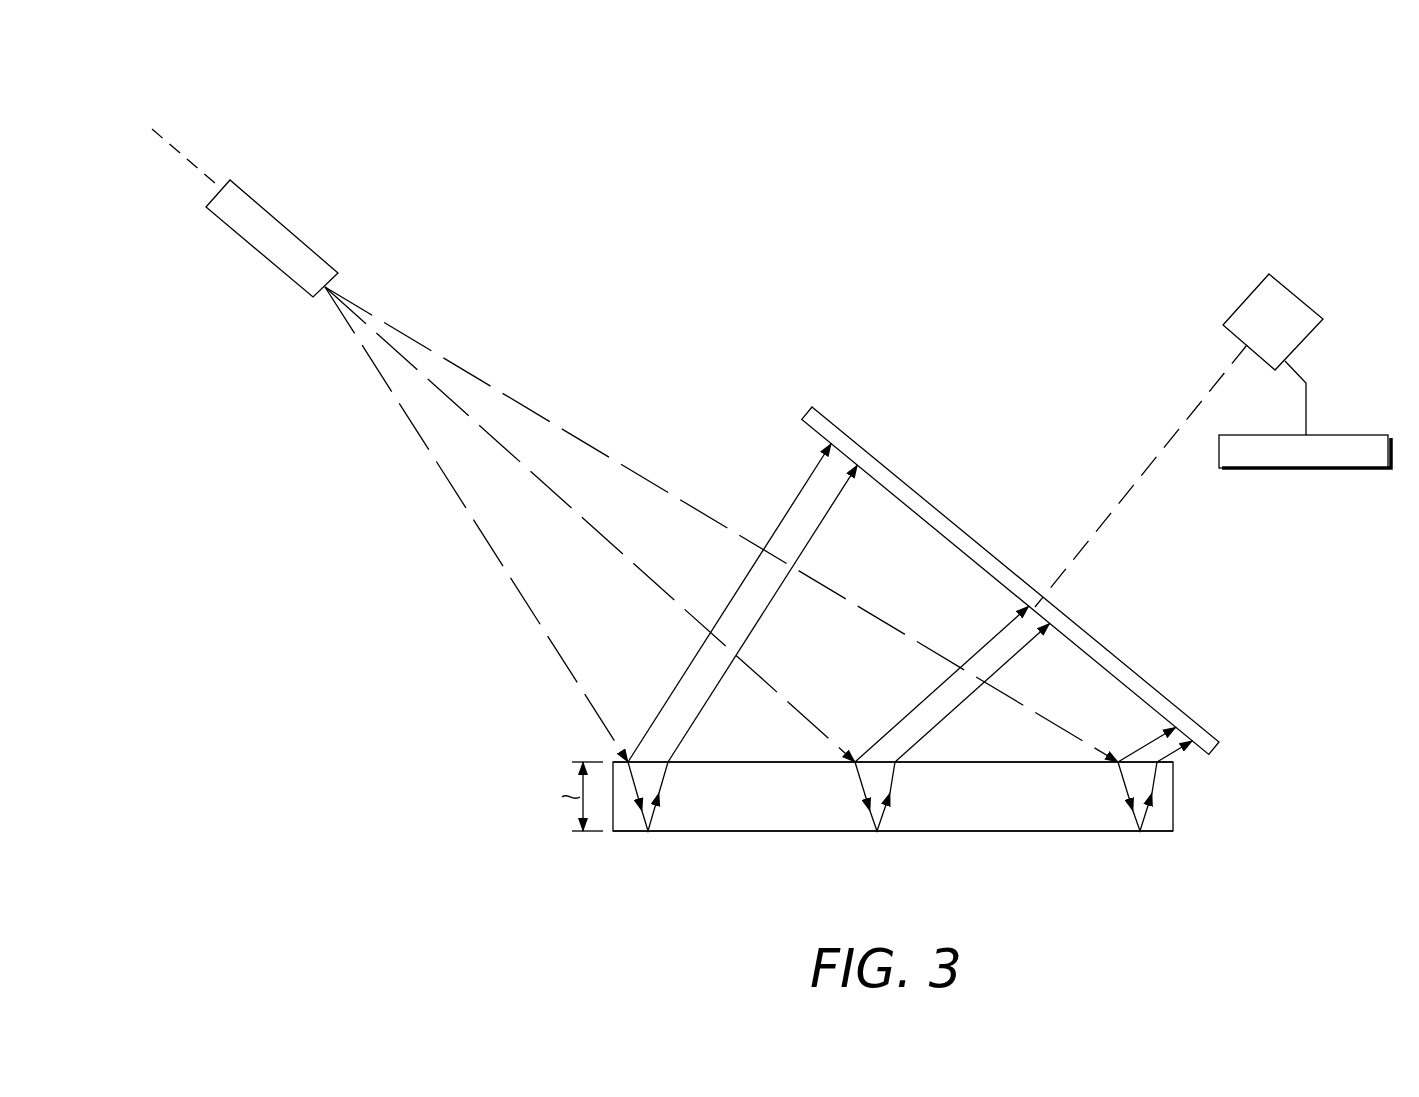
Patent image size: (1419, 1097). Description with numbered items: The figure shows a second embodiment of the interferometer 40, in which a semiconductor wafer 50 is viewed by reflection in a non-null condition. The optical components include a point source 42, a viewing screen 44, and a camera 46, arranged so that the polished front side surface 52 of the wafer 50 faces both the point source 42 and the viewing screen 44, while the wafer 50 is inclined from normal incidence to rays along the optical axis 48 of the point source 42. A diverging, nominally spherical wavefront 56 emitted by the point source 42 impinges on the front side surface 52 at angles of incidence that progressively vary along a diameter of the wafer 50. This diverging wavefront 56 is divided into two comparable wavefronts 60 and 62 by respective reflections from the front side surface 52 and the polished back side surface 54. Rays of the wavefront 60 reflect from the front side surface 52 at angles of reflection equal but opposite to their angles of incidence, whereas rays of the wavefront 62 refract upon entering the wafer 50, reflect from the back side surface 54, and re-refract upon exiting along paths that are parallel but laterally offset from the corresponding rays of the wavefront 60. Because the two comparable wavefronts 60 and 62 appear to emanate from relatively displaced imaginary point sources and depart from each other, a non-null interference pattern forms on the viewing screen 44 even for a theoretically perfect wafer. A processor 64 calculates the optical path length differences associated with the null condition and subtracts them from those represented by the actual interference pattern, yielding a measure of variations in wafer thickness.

The interferometer 40 is at (1212, 687).
The point source 42 is at (283, 222).
The viewing screen 44 is at (938, 508).
The camera 46 is at (1282, 336).
The optical axis 48 is at (185, 158).
The semiconductor wafer 50 is at (1018, 808).
The front side surface 52 is at (798, 760).
The back side surface 54 is at (792, 834).
The diverging wavefront 56 is at (622, 456).
The wavefront 60 is at (688, 664).
The wavefront 62 is at (716, 675).
The processor 64 is at (1347, 435).